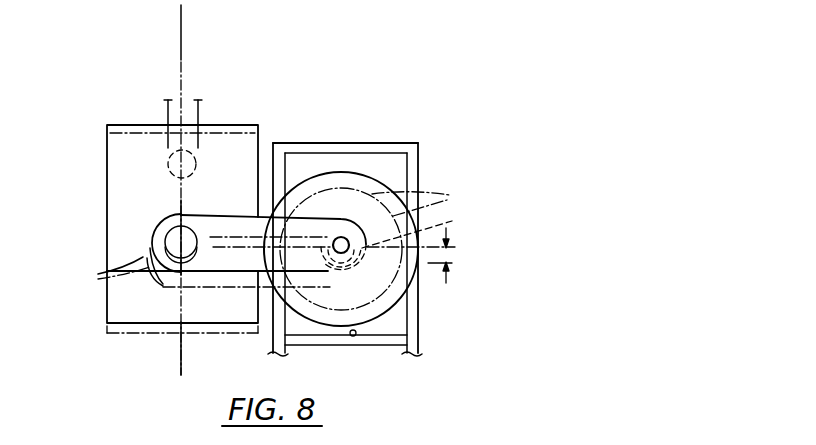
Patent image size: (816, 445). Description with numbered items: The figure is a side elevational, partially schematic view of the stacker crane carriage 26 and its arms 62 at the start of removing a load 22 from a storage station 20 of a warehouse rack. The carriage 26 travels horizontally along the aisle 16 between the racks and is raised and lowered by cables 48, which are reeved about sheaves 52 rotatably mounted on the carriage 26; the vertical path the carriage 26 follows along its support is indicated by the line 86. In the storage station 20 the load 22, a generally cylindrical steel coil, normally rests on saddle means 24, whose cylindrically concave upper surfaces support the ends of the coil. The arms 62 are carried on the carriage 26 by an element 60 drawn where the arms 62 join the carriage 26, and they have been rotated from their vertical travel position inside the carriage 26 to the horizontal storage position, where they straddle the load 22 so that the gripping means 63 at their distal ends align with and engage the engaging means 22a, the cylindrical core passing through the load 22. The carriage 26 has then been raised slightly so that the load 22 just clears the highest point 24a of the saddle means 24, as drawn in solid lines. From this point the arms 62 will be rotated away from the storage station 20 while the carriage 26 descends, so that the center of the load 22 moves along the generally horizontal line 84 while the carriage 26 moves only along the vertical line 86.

The vertical path line 86 is at (183, 33).
The carriage 26 is at (107, 173).
The aisle 16 is at (242, 370).
The cables 48 is at (197, 108).
The sheaves 52 is at (197, 152).
The arms 62 is at (227, 216).
The cable 60 is at (197, 272).
The storage station 20 is at (411, 171).
The gripping means 63 is at (337, 237).
The load 22 is at (424, 204).
The engaging means 22a is at (424, 230).
The horizontal line 84 is at (455, 247).
The highest point of the saddle means 24a is at (370, 326).
The saddle means 24 is at (355, 337).